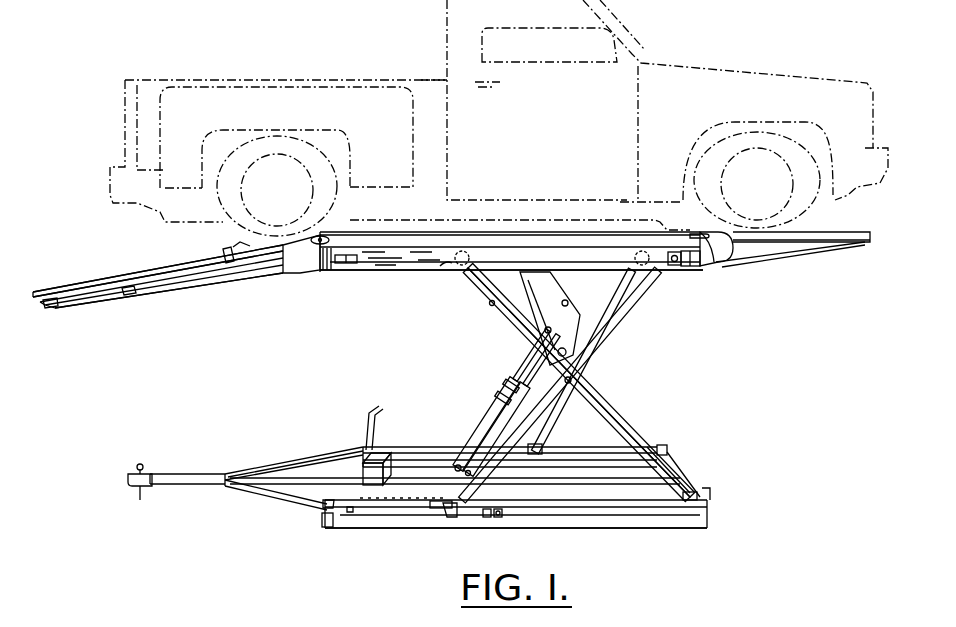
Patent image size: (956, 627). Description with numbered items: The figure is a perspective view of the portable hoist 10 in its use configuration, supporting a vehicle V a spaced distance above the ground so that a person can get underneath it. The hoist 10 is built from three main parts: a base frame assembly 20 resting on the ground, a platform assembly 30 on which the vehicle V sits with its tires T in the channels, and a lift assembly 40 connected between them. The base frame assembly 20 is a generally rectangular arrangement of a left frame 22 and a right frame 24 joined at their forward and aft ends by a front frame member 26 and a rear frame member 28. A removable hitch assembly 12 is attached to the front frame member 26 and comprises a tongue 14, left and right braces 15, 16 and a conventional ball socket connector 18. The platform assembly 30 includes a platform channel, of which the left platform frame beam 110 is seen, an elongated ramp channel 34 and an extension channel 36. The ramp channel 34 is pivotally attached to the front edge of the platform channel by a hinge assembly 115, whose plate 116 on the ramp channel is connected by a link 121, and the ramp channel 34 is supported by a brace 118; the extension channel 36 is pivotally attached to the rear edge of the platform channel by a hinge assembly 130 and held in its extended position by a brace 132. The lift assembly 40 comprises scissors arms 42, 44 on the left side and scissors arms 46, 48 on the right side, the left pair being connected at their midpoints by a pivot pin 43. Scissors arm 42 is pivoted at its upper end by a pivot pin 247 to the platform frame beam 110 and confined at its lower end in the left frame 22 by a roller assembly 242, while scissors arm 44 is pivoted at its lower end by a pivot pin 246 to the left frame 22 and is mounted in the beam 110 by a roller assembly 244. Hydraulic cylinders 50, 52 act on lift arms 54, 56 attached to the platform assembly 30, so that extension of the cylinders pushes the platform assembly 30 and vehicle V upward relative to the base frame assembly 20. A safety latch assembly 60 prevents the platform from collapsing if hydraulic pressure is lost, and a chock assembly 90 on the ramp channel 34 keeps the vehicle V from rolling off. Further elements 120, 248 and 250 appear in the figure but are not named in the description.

The portable hoist 10 is at (672, 543).
The removable hitch assembly 12 is at (220, 491).
The tongue 14 is at (198, 474).
The left brace 15 is at (302, 505).
The right brace 16 is at (268, 465).
The ball socket connector 18 is at (128, 481).
The base frame assembly 20 is at (648, 537).
The left frame 22 is at (580, 530).
The right frame 24 is at (440, 448).
The front frame member 26 is at (340, 455).
The rear frame member 28 is at (680, 470).
The platform assembly 30 is at (370, 278).
The left ramp channel 34 is at (93, 300).
The left extension channel 36 is at (847, 244).
The lift assembly 40 is at (602, 366).
The scissors arm 42 is at (530, 444).
The pivot pin 43 is at (571, 381).
The scissors arm 44 is at (628, 431).
The scissors arm 46 is at (489, 304).
The scissors arm 48 is at (622, 293).
The hydraulic cylinder 50 is at (488, 425).
The hydraulic cylinder 52 is at (490, 400).
The lift arm 54 is at (560, 278).
The lift arm 56 is at (537, 305).
The safety latch assembly 60 is at (441, 496).
The chock assembly 90 is at (218, 247).
The left platform frame beam 110 is at (560, 232).
The hinge assembly 115 is at (283, 262).
The plate 116 is at (300, 272).
The brace 118 is at (190, 286).
The gusset 120 is at (318, 274).
The link 121 is at (328, 237).
The hinge assembly 130 is at (724, 264).
The brace 132 is at (752, 256).
The roller assembly 242 is at (458, 517).
The roller assembly 244 is at (452, 264).
The pivot pin 246 is at (690, 521).
The pivot pin 247 is at (674, 266).
The hinge 248 is at (641, 265).
The hinge 250 is at (443, 270).
The tires T is at (323, 161).
The vehicle V is at (651, 63).